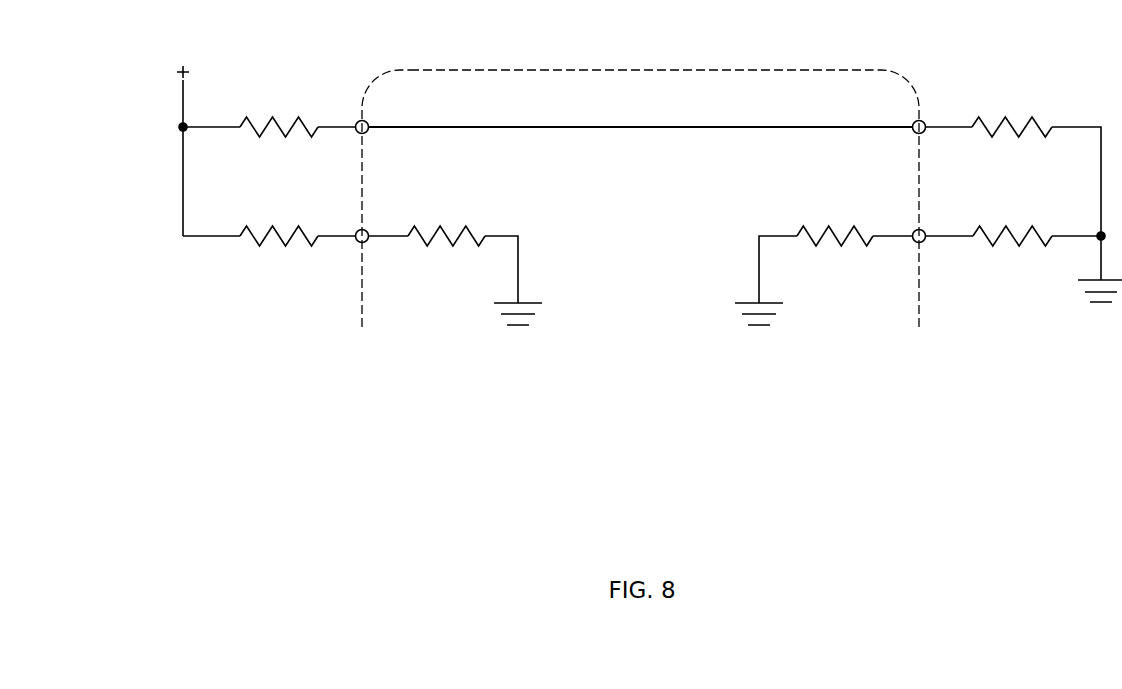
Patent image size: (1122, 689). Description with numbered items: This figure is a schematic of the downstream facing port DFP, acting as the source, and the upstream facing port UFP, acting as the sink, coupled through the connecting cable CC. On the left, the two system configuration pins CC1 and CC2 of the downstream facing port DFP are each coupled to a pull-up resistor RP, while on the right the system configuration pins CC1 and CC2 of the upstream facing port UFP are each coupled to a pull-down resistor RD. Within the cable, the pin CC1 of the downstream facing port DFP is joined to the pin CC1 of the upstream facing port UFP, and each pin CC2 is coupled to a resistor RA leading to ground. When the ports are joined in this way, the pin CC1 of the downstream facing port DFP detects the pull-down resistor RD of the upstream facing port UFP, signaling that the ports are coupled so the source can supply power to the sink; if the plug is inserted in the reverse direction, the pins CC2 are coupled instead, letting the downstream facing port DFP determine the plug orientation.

The downstream facing port DFP is at (310, 40).
The upstream facing port UFP is at (1028, 54).
The pull-up resistor RP is at (269, 167).
The pull-down resistor RD is at (1024, 195).
The cable termination resistor RA is at (641, 261).
The connecting cable CC is at (641, 142).
The system configuration pin CC1 is at (641, 139).
The system configuration pin CC2 is at (641, 247).